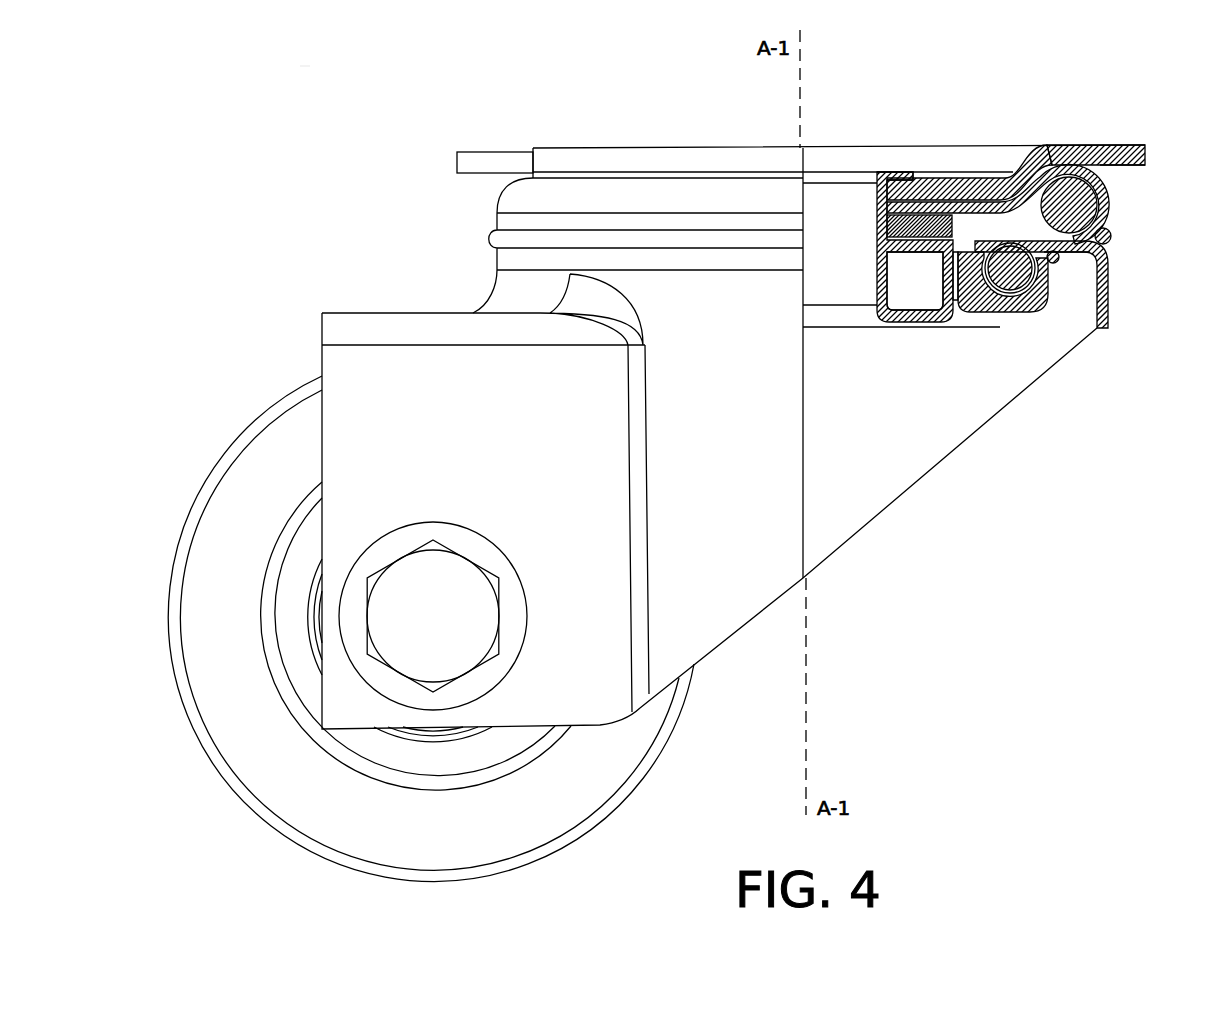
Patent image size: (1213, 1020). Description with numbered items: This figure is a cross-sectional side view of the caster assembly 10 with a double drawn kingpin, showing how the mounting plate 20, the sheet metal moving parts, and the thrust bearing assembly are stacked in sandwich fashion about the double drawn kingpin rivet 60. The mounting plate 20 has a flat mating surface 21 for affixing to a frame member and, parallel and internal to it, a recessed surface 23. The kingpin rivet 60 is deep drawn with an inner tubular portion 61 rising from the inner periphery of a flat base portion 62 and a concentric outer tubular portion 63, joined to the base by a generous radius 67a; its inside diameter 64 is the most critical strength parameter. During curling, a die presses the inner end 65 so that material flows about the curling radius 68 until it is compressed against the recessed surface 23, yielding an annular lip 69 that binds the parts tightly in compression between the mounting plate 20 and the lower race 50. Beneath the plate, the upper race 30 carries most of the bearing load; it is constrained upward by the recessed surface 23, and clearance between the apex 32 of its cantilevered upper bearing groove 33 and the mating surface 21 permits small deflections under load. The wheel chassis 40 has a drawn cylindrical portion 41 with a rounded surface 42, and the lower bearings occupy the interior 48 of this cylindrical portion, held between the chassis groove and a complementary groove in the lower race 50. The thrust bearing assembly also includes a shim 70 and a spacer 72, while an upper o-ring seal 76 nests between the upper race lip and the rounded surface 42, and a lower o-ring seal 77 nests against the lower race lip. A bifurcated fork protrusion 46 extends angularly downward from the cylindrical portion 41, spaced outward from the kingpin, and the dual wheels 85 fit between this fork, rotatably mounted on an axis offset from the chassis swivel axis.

The caster assembly 10 is at (325, 103).
The mounting plate 20 is at (478, 140).
The mating surface 21 is at (1110, 145).
The recessed surface 23 is at (980, 177).
The upper race 30 is at (1112, 198).
The apex of the bearing groove 32 is at (1140, 166).
The upper bearing groove 33 is at (1107, 218).
The wheel chassis 40 is at (868, 518).
The drawn cylindrical portion 41 is at (767, 528).
The rounded surface 42 is at (1060, 264).
The fork protrusion 46 is at (345, 362).
The interior of the cylindrical portion 48 is at (872, 363).
The lower race 50 is at (1097, 328).
The double drawn kingpin rivet 60 is at (857, 162).
The inner tubular portion 61 is at (888, 275).
The flat base portion 62 is at (892, 322).
The outer tubular portion 63 is at (958, 296).
The inside diameter 64 is at (880, 332).
The inner end 65 is at (920, 175).
The radius 67a is at (925, 319).
The curling radius 68 is at (870, 177).
The annular lip 69 is at (898, 172).
The shim 70 is at (1043, 280).
The spacer 72 is at (1032, 303).
The upper o-ring seal 76 is at (1112, 242).
The lower o-ring seal 77 is at (1050, 270).
The dual wheels 85 is at (245, 398).